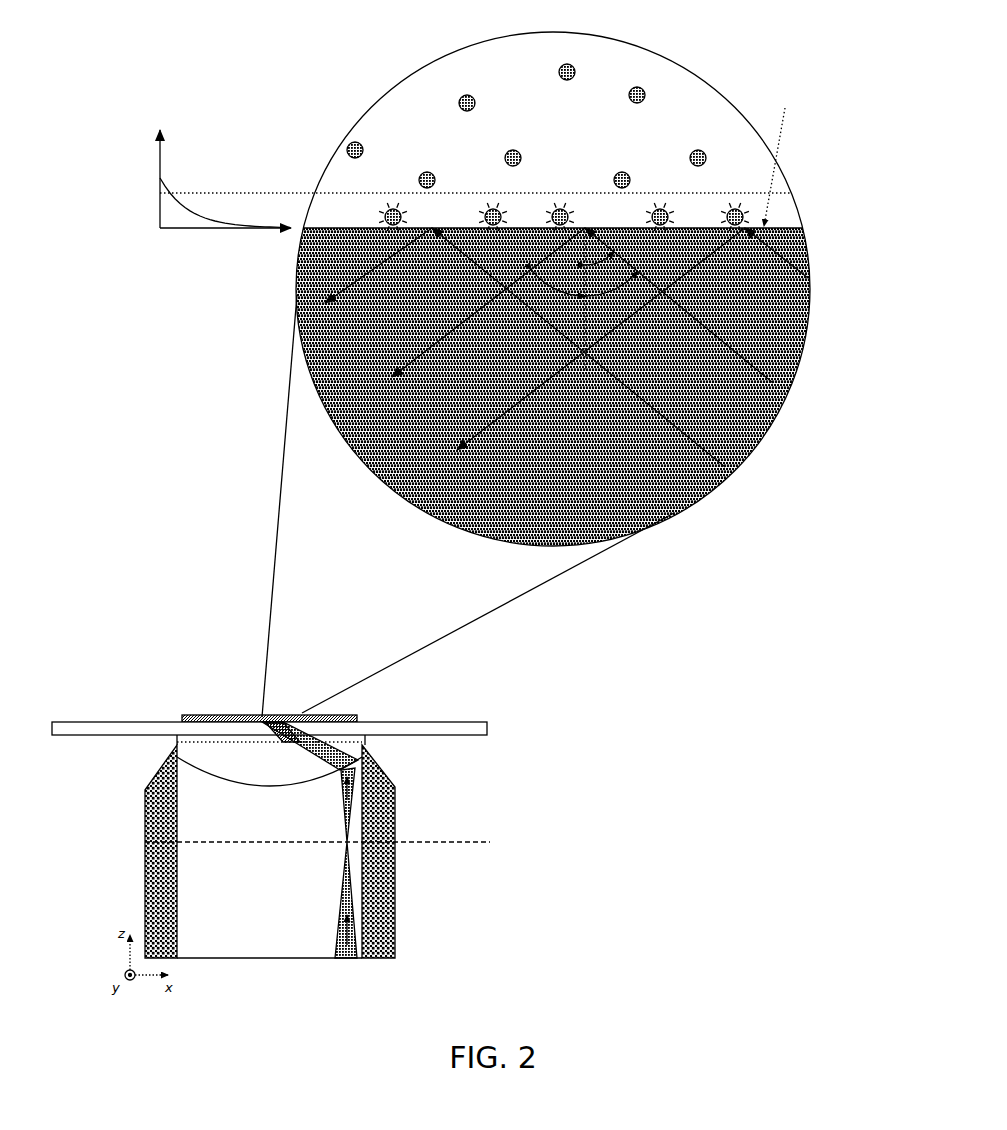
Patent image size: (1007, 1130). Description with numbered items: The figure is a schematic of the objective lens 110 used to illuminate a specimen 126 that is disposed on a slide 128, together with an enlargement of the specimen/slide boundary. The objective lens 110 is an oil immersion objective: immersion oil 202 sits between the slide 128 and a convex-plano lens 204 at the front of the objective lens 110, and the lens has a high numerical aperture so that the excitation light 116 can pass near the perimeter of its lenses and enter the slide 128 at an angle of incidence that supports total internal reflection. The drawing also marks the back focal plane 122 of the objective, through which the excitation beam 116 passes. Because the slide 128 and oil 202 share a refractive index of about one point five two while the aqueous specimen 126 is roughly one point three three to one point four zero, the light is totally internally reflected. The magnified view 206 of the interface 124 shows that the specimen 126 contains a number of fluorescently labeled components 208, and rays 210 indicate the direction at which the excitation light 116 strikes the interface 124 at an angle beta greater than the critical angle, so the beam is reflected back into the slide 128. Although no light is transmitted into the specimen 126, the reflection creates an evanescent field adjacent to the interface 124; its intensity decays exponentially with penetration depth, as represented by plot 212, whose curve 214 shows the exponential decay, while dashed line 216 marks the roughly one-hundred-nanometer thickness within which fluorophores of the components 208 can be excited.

The objective lens 110 is at (152, 870).
The excitation light 116 is at (345, 960).
The back focal plane 122 is at (407, 840).
The interface 124 is at (780, 228).
The specimen 126 is at (539, 146).
The slide 128 is at (539, 492).
The immersion oil 202 is at (173, 740).
The convex-plano lens 204 is at (220, 763).
The magnified view 206 is at (418, 508).
The fluorescently labeled components 208 is at (489, 206).
The rays 210 is at (723, 460).
The plot 212 is at (232, 72).
The curve 214 is at (188, 210).
The dashed line 216 is at (256, 192).